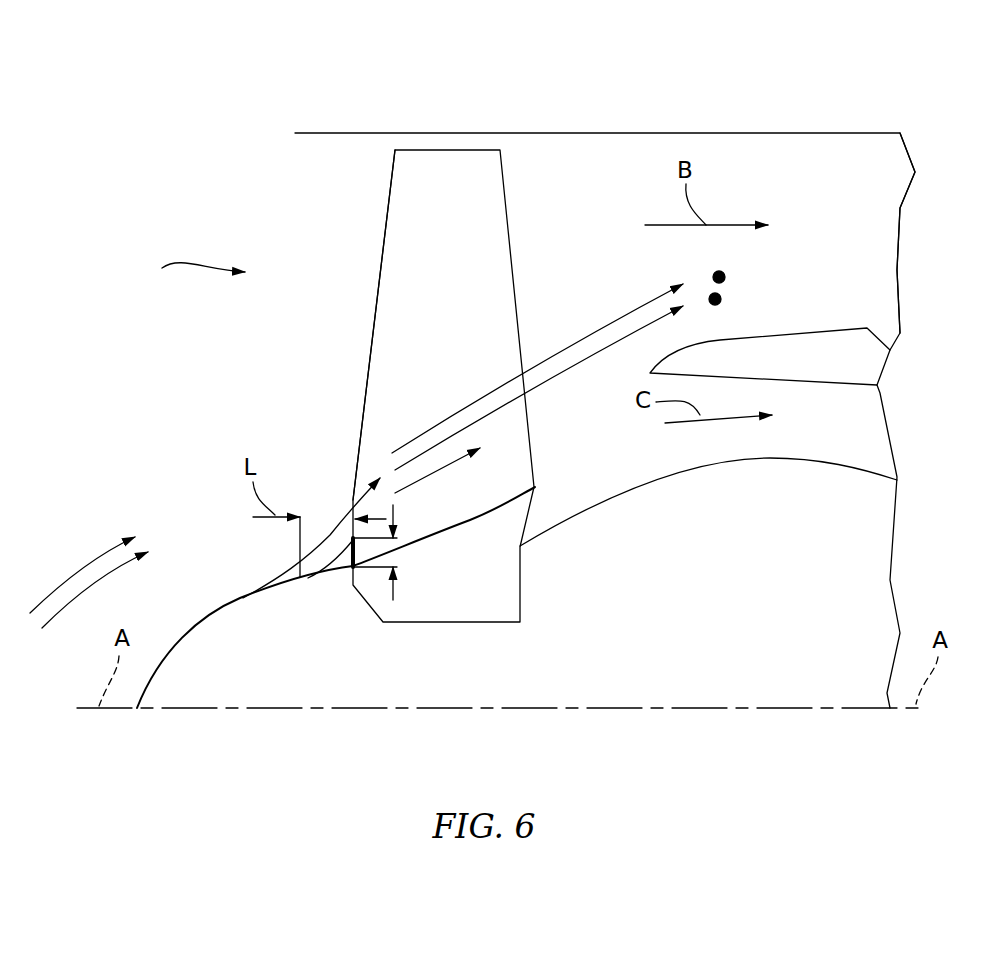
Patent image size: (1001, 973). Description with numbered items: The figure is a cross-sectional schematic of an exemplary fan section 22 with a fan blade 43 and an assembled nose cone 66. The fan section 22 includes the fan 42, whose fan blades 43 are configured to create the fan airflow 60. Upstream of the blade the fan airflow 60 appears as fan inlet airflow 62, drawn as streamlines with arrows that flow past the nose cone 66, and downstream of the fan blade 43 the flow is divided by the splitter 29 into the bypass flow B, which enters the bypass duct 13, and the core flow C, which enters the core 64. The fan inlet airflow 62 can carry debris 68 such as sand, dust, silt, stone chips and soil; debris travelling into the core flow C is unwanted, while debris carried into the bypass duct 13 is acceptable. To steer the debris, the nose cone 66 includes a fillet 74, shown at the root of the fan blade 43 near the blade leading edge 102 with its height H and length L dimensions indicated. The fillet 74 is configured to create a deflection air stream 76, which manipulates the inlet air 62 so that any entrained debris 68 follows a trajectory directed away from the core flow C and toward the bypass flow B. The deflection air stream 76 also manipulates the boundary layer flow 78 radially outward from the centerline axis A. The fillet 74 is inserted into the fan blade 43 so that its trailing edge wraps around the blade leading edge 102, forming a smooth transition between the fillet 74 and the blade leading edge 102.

The fan section 22 is at (524, 90).
The fan 42 is at (272, 167).
The fan airflow 60 is at (198, 262).
The blade leading edge 102 is at (380, 257).
The fan blade 43 is at (428, 294).
The bypass duct 13 is at (845, 217).
The splitter 29 is at (821, 364).
The core 64 is at (833, 437).
The debris 68 is at (721, 299).
The fan inlet airflow 62 is at (607, 330).
The nose cone 66 is at (152, 688).
The deflection air stream 76 is at (350, 538).
The boundary layer flow 78 is at (420, 480).
The fillet 74 is at (346, 565).